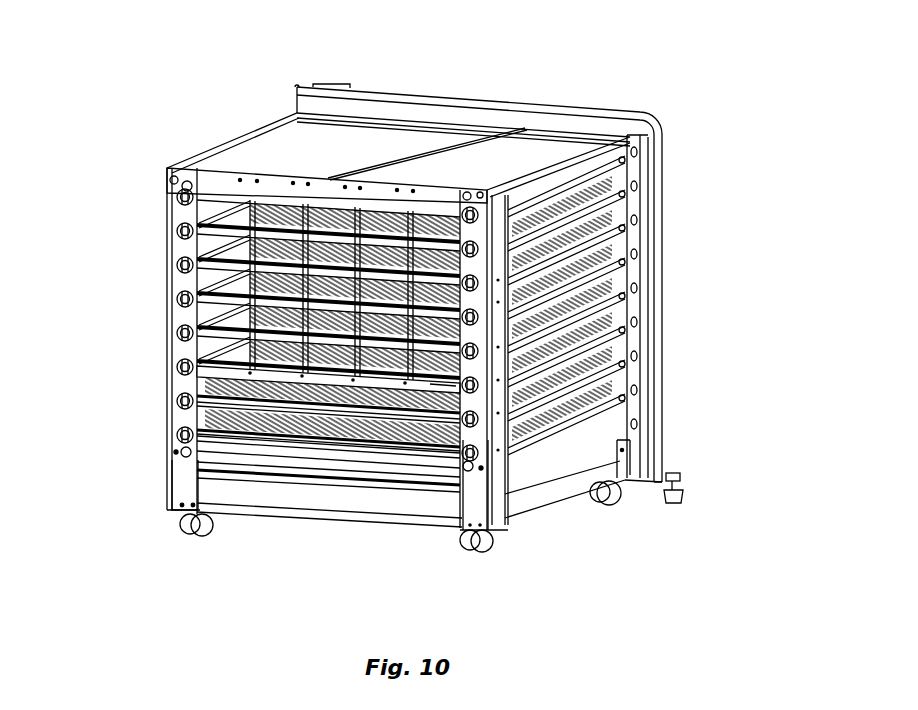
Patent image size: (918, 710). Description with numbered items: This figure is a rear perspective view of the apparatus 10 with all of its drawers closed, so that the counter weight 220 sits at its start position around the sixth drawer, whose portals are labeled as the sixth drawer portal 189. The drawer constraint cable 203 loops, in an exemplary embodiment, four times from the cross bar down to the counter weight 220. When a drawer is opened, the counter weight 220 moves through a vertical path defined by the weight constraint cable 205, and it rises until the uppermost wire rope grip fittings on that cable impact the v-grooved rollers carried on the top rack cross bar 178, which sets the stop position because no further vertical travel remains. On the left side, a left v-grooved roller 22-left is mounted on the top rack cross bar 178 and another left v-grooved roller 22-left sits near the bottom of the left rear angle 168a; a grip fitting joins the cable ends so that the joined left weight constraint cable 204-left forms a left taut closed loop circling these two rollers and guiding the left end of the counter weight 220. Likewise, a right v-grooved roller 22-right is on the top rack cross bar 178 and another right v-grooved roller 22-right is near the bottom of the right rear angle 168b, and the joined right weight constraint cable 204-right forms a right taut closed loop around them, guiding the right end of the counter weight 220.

The apparatus 10 is at (90, 70).
The right v-grooved roller 22-right is at (188, 183).
The left v-grooved roller 22-left is at (570, 197).
The top rack cross bar 178 is at (383, 192).
The weight constraint cable 205 is at (205, 360).
The sixth drawer portal 189 is at (188, 366).
The joined right weight constraint cable 204-right is at (190, 414).
The joined left weight constraint cable 204-left is at (432, 386).
The right rear angle 168b is at (193, 473).
The left rear angle 168a is at (478, 494).
The drawer constraint cable 203 is at (440, 312).
The counter weight 220 is at (462, 372).